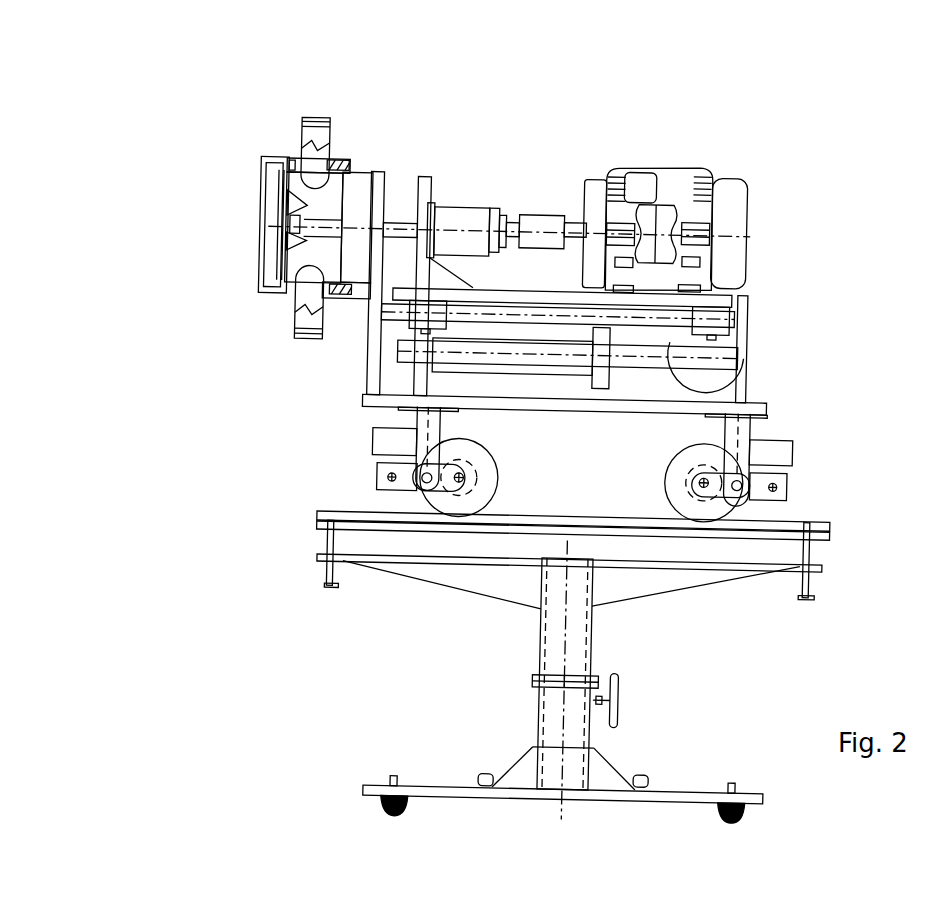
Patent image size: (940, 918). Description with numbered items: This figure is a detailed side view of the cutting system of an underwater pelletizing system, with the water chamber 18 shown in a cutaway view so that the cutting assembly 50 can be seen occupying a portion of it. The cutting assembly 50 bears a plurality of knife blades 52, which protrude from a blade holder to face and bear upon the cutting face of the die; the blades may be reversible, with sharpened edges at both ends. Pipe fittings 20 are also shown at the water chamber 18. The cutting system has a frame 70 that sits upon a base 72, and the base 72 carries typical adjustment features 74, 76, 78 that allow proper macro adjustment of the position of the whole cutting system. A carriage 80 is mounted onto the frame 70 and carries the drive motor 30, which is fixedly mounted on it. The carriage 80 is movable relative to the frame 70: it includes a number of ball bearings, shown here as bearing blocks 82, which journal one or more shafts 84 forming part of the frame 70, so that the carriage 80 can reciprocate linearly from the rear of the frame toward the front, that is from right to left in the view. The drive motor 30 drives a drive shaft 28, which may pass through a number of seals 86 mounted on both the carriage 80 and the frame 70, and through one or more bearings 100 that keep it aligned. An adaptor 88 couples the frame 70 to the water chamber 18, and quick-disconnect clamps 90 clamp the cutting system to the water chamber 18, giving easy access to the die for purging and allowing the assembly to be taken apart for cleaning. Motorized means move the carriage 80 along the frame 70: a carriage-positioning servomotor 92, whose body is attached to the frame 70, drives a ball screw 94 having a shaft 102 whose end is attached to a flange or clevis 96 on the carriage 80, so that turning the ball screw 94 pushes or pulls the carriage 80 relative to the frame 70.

The water chamber 18 is at (293, 267).
The tubing 20 is at (300, 137).
The drive shaft 28 is at (402, 226).
The drive motor 30 is at (667, 167).
The cutting assembly 50 is at (278, 162).
The knife blades 52 is at (288, 210).
The frame 70 is at (750, 317).
The base 72 is at (770, 618).
The adjustment feature 74 is at (477, 773).
The adjustment feature 76 is at (537, 647).
The adjustment feature 78 is at (330, 583).
The carriage 80 is at (525, 295).
The bearing block 82 is at (408, 328).
The shafts 84 is at (723, 378).
The seals 86 is at (390, 226).
The adaptor 88 is at (370, 170).
The quick-disconnect clamps 90 is at (336, 297).
The carriage-positioning servomotor 92 is at (713, 367).
The ball screw 94 is at (483, 370).
The flange or clevis 96 is at (405, 343).
The bearings 100 is at (522, 295).
The shaft 102 is at (435, 395).